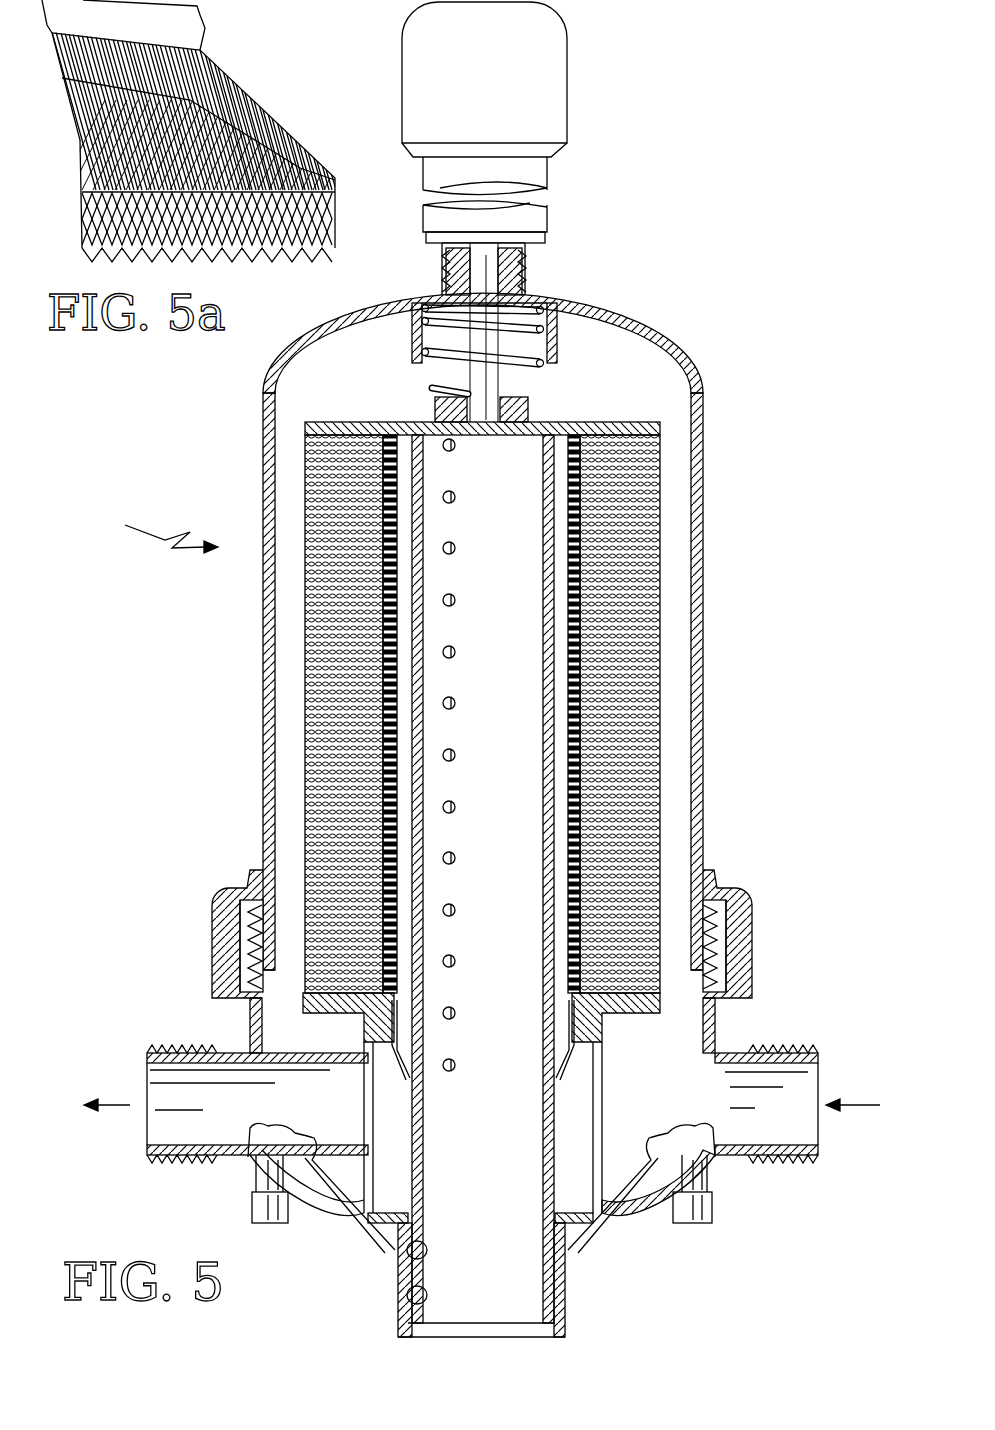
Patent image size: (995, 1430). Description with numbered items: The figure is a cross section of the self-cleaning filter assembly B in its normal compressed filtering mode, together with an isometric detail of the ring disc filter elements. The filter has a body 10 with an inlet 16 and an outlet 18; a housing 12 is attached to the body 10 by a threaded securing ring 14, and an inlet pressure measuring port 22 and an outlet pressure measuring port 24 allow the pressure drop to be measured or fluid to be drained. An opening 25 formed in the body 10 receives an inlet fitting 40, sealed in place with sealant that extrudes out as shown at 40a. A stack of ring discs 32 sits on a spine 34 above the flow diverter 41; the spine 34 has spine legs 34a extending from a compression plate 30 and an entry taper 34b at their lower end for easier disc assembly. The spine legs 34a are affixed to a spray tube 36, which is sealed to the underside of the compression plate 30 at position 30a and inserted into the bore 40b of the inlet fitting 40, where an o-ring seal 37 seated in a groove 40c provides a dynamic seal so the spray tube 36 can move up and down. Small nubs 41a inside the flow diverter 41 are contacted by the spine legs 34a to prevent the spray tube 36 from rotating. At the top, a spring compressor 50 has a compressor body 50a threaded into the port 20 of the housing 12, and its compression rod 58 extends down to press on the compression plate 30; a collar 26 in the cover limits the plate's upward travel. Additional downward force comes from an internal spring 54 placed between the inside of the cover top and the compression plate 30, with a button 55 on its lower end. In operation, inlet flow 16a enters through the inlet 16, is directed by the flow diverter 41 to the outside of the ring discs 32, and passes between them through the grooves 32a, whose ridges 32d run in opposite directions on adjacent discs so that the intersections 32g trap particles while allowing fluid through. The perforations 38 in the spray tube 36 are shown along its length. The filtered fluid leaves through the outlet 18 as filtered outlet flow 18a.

In FIG. 5, the body 10 is at (316, 1225).
In FIG. 5, the housing 12 is at (704, 626).
In FIG. 5, the threaded securing ring 14 is at (738, 893).
In FIG. 5, the inlet 16 is at (797, 1158).
In FIG. 5, the inlet flow 16a is at (853, 1089).
In FIG. 5, the outlet 18 is at (150, 1160).
In FIG. 5, the filtered outlet flow 18a is at (107, 1089).
In FIG. 5, the port 20 is at (535, 275).
In FIG. 5, the inlet pressure measuring port 22 is at (712, 1205).
In FIG. 5, the outlet pressure measuring port 24 is at (258, 1205).
In FIG. 5, the opening 25 is at (408, 1258).
In FIG. 5, the collar 26 is at (558, 352).
In FIG. 5, the compression plate 30 is at (630, 425).
In FIG. 5, the sealed position 30a is at (660, 443).
In FIG. 5A, the ring discs 32 is at (97, 240).
In FIG. 5, the ring discs 32 is at (640, 735).
In FIG. 5A, the grooves 32a is at (253, 167).
In FIG. 5A, the ridges 32d is at (230, 265).
In FIG. 5A, the intersections 32g is at (112, 167).
In FIG. 5, the spine 34 is at (292, 426).
In FIG. 5, the spine legs 34a is at (400, 775).
In FIG. 5, the entry taper 34b is at (575, 1070).
In FIG. 5, the spray tube 36 is at (418, 682).
In FIG. 5, the o-ring seal 37 is at (392, 1245).
In FIG. 5, the perforations 38 is at (554, 548).
In FIG. 5, the inlet fitting 40 is at (565, 1308).
In FIG. 5, the extruded sealant 40a is at (565, 1252).
In FIG. 5, the bore 40b is at (400, 1305).
In FIG. 5, the groove 40c is at (567, 1222).
In FIG. 5, the flow diverter 41 is at (688, 1120).
In FIG. 5, the nubs 41a is at (424, 1036).
In FIG. 5, the spring compressor 50 is at (542, 121).
In FIG. 5, the spring compressor body 50a is at (541, 70).
In FIG. 5, the internal spring 54 is at (560, 392).
In FIG. 5, the button 55 is at (435, 410).
In FIG. 5, the compression rod 58 is at (556, 320).
In FIG. 5, the self-cleaning filter assembly B is at (163, 534).